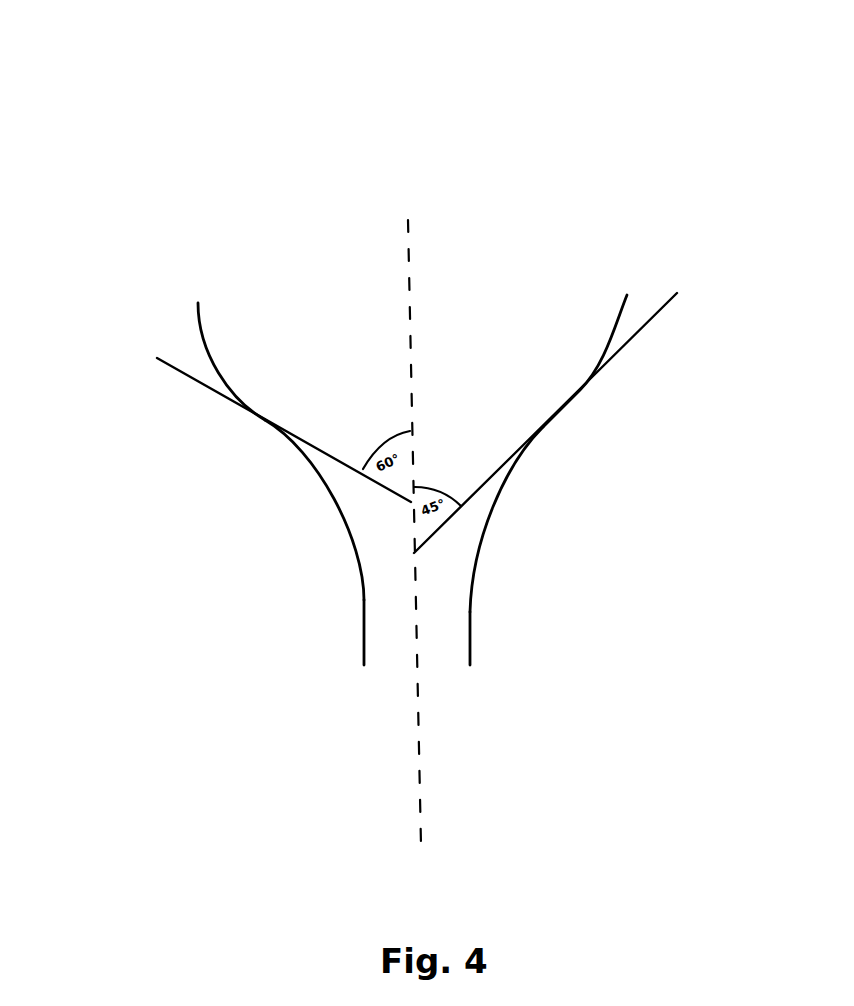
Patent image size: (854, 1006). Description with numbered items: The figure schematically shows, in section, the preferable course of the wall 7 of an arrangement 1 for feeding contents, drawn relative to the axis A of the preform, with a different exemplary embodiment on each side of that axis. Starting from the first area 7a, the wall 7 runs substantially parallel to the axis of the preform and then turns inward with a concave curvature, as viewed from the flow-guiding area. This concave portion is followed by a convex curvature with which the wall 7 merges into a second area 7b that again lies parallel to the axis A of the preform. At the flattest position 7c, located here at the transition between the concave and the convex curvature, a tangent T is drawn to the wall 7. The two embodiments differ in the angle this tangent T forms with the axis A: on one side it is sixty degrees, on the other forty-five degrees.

The arrangement for feeding contents 1 is at (114, 122).
The wall 7 is at (490, 535).
The first area 7a is at (193, 305).
The second area 7b is at (362, 653).
The flattest position 7c is at (265, 420).
The tangent T is at (414, 415).
The axis of the preform A is at (407, 516).